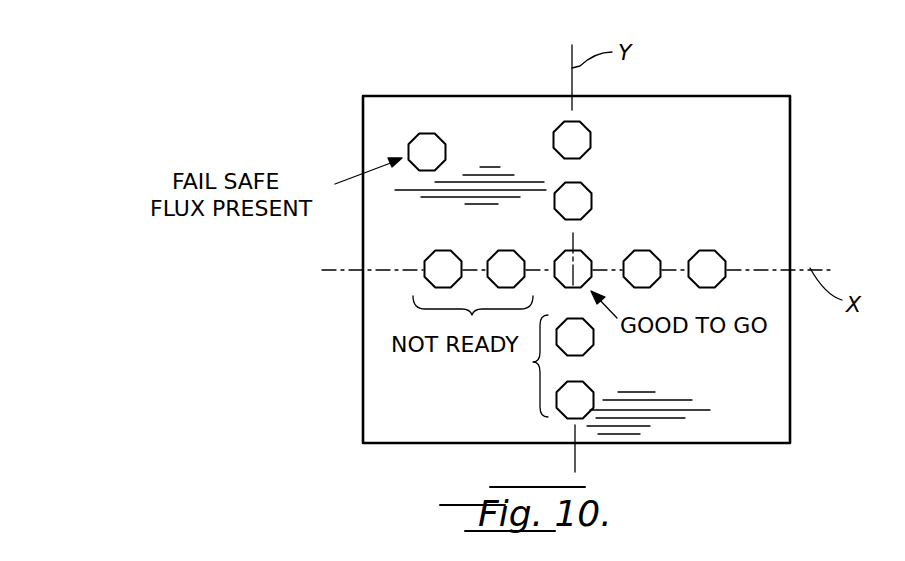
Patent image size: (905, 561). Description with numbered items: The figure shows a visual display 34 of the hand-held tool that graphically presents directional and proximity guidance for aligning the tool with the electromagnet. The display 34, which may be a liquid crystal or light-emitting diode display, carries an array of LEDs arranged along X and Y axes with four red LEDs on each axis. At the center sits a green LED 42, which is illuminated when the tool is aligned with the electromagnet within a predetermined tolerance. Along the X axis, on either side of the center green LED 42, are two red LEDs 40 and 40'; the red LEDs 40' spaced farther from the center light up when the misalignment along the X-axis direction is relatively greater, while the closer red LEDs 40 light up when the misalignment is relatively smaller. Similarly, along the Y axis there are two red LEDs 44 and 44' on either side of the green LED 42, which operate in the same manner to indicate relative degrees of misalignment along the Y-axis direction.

The visual display 34 is at (460, 96).
The red LEDs 40 is at (570, 244).
The red LEDs 40' is at (559, 242).
The center green LED 42 is at (562, 252).
The red LEDs 44 is at (611, 274).
The red LEDs 44' is at (622, 294).